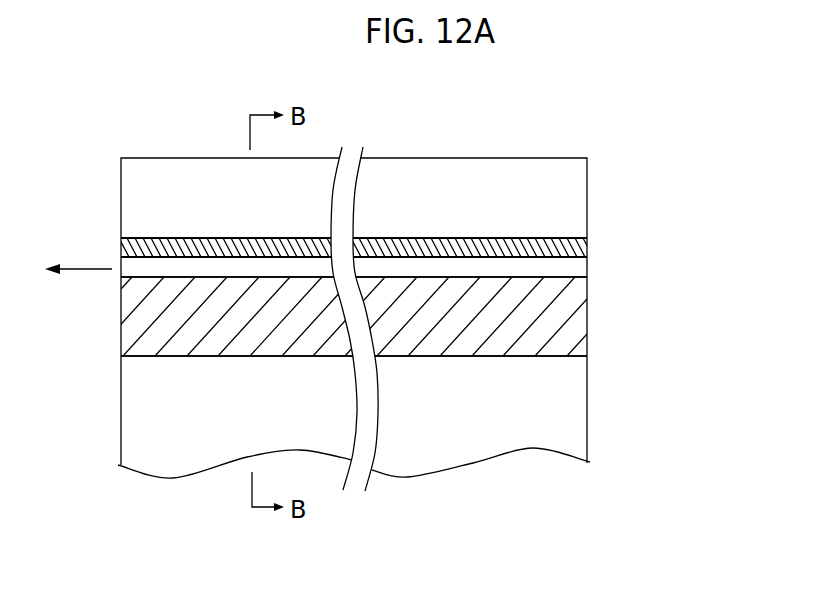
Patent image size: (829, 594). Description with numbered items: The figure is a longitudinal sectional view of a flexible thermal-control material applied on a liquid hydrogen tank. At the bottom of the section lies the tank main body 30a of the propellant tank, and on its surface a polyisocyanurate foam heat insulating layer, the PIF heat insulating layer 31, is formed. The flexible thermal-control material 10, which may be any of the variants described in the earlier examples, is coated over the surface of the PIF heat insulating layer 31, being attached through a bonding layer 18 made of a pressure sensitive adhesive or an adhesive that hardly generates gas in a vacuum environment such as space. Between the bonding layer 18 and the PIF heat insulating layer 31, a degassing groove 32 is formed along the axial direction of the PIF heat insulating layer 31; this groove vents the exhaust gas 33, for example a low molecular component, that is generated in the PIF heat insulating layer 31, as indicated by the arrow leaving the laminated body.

The flexible thermal-control material 10 is at (578, 186).
The bonding layer 18 is at (578, 248).
The degassing groove 32 is at (578, 270).
The PIF heat insulating layer 31 is at (580, 310).
The tank main body 30a is at (587, 405).
The exhaust gas 33 is at (80, 267).